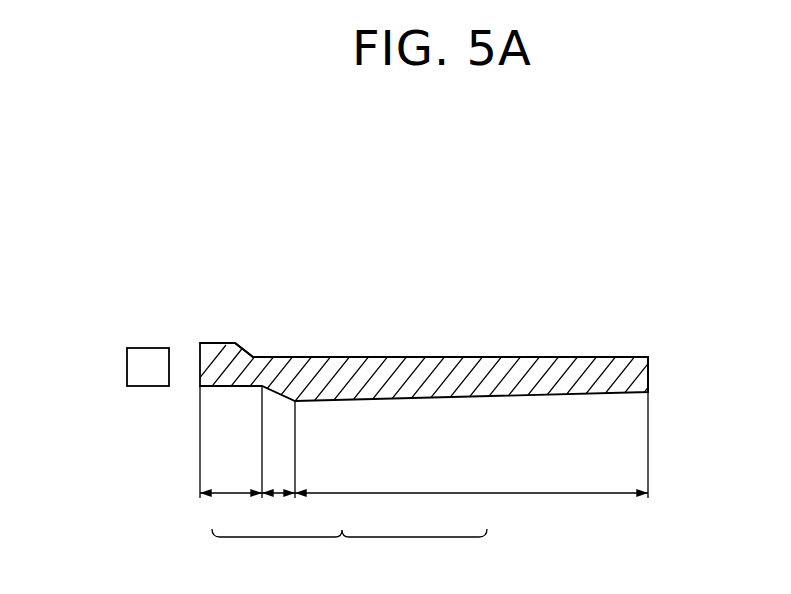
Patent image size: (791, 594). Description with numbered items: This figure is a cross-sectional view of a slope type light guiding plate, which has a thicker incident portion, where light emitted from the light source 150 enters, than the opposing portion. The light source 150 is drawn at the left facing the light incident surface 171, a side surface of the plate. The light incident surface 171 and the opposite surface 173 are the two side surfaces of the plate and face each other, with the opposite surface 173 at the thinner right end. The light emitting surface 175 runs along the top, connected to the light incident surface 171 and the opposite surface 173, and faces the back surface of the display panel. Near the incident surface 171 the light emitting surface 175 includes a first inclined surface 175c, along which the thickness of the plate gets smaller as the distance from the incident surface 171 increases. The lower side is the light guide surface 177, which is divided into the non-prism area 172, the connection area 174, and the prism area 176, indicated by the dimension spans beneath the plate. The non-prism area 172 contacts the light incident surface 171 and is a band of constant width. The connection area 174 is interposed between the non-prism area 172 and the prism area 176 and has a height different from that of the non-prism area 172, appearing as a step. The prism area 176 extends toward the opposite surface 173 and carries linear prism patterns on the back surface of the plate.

The light source 150 is at (127, 367).
The light incident surface 171 is at (199, 357).
The first inclined surface 175c is at (245, 355).
The light emitting surface 175 is at (505, 357).
The opposite surface 173 is at (650, 371).
The non-prism area 172 is at (231, 511).
The connection area 174 is at (282, 511).
The prism area 176 is at (471, 510).
The light guide surface 177 is at (349, 550).